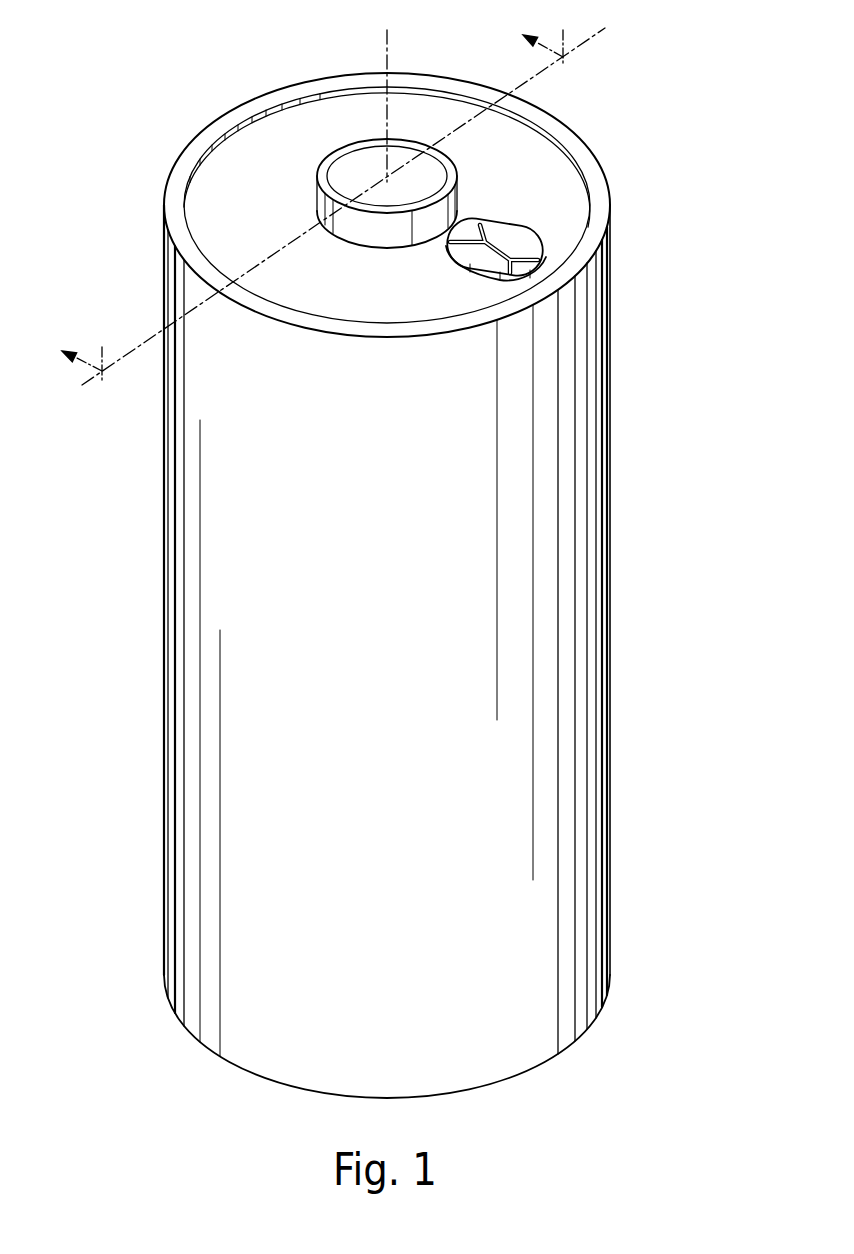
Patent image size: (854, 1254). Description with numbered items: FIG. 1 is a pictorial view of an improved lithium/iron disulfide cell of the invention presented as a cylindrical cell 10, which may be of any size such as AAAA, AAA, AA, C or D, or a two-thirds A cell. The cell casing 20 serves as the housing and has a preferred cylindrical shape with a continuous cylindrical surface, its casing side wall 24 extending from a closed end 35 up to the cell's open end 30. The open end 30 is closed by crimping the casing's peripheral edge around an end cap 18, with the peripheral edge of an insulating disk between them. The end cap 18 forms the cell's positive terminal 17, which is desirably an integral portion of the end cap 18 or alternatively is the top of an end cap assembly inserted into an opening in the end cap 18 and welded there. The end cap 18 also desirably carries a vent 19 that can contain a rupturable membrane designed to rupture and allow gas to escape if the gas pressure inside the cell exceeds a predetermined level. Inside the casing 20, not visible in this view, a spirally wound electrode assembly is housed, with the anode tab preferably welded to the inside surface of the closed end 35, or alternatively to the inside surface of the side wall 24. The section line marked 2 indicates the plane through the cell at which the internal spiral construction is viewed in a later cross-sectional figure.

The section line 2- 2 is at (333, 213).
The cylindrical cell 10 is at (128, 578).
The positive terminal 17 is at (343, 148).
The end cap 18 is at (573, 208).
The vent 19 is at (480, 260).
The cell casing 20 is at (624, 474).
The casing side wall 24 is at (610, 395).
The open end 30 is at (553, 168).
The closed end 35 is at (232, 1063).